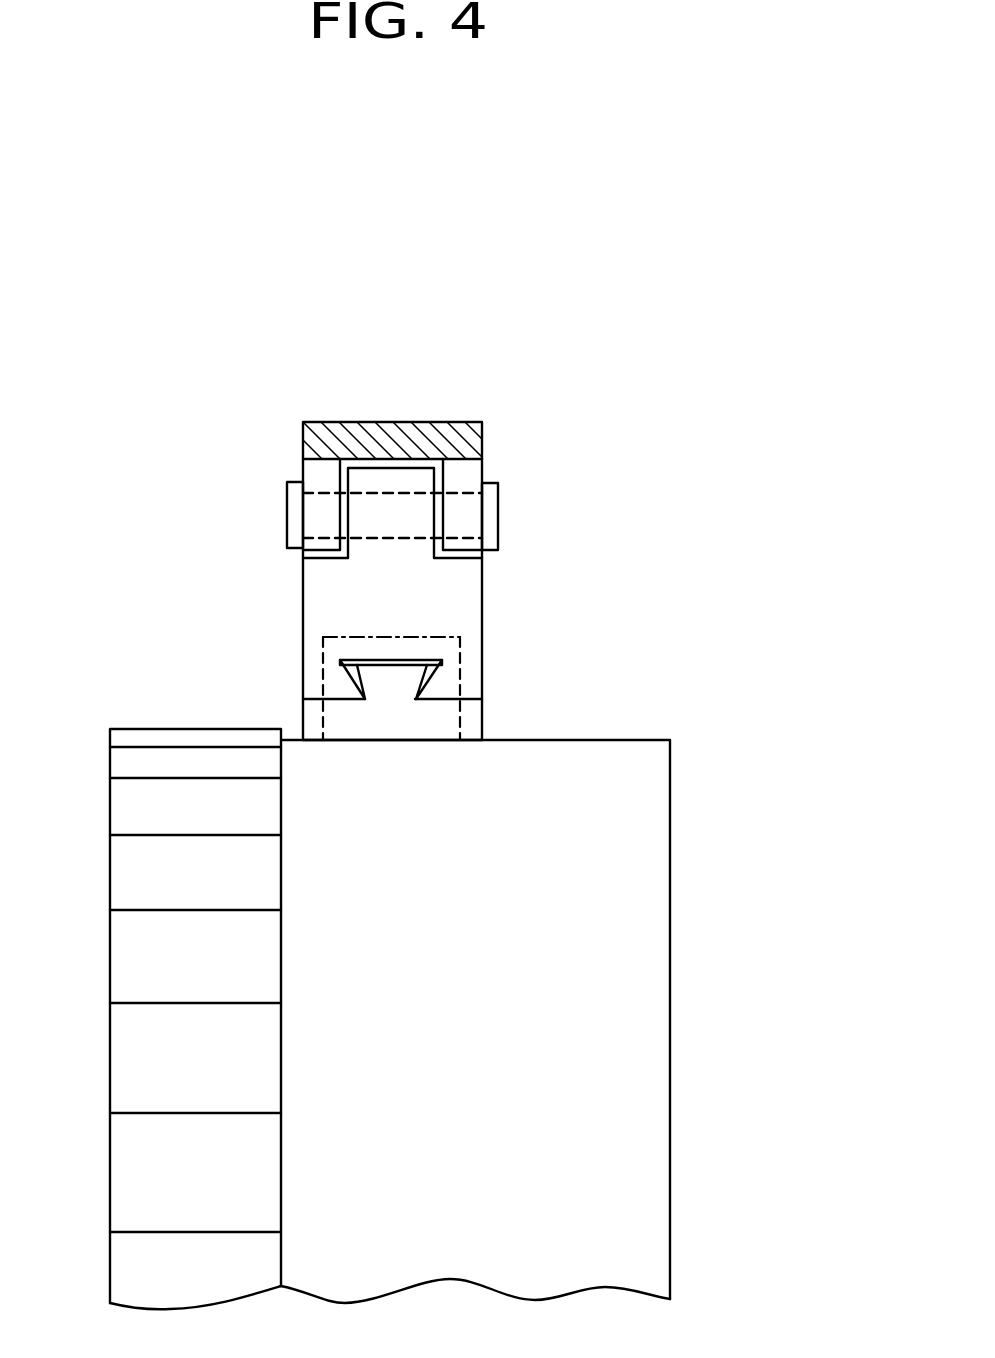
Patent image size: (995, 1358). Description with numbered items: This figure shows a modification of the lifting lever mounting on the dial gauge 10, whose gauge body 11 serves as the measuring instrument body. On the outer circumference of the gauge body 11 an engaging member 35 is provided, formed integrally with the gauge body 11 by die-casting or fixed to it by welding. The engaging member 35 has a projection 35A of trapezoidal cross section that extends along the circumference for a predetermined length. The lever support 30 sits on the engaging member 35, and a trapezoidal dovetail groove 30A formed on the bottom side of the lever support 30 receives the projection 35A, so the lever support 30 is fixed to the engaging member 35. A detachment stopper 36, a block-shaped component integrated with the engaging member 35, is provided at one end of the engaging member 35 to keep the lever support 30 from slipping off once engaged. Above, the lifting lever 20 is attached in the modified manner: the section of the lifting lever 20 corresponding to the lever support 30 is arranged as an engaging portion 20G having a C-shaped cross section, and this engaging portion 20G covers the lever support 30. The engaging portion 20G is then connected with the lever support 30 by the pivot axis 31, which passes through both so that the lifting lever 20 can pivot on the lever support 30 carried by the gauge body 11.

The dial gauge 10 is at (150, 727).
The gauge body 11 is at (132, 897).
The lifting lever 20 is at (478, 432).
The engaging portion 20G is at (478, 473).
The lever support 30 is at (470, 580).
The dovetail groove 30A is at (423, 677).
The pivot axis 31 is at (493, 520).
The engaging member 35 is at (345, 725).
The projection 35A is at (350, 678).
The detachment stopper 36 is at (467, 678).